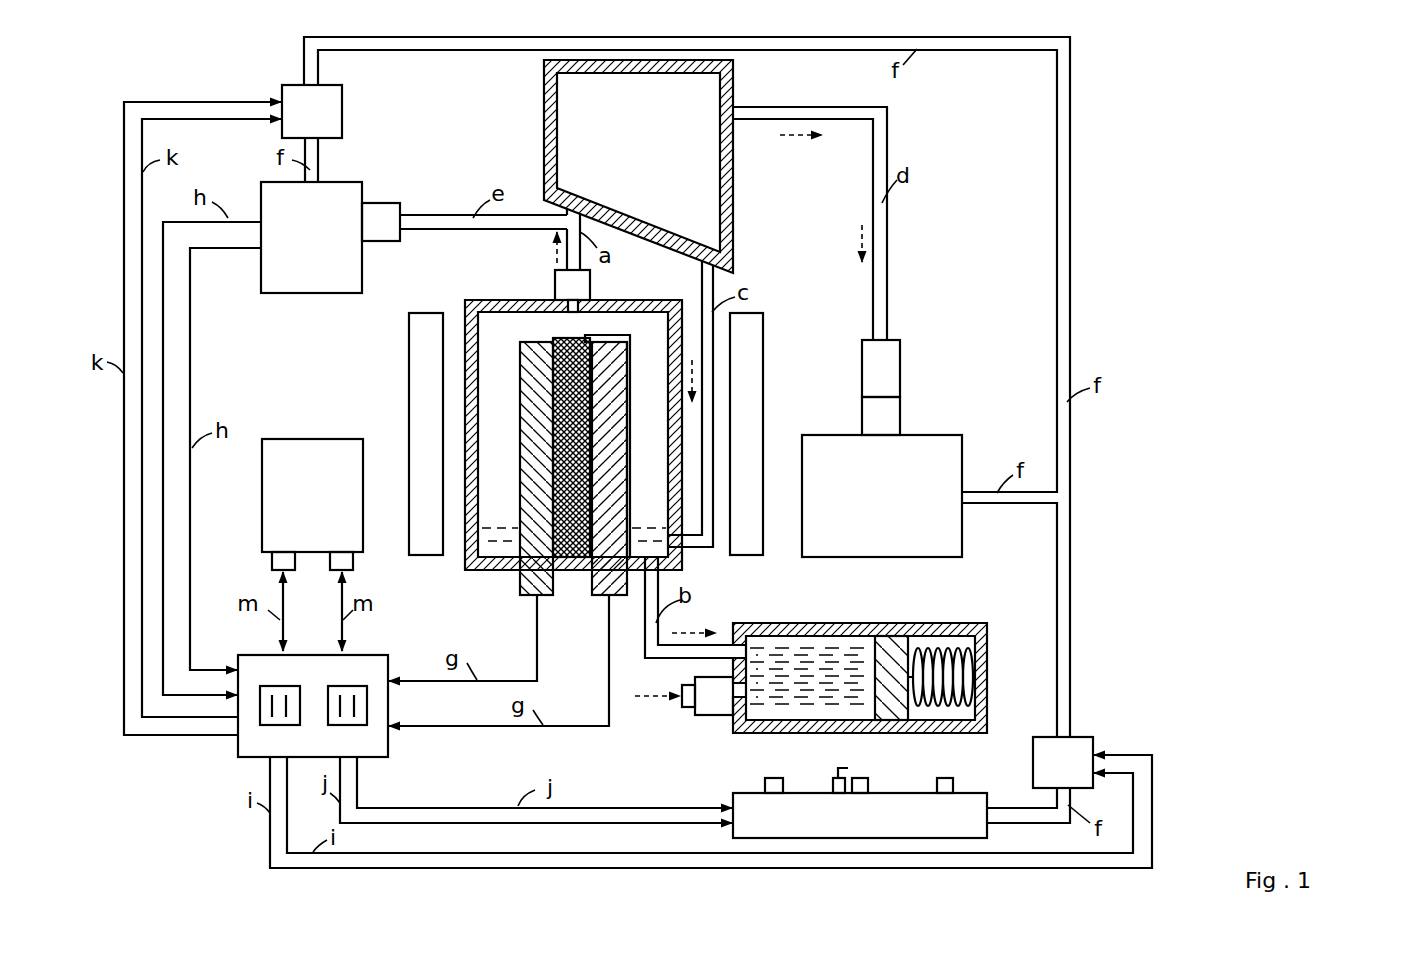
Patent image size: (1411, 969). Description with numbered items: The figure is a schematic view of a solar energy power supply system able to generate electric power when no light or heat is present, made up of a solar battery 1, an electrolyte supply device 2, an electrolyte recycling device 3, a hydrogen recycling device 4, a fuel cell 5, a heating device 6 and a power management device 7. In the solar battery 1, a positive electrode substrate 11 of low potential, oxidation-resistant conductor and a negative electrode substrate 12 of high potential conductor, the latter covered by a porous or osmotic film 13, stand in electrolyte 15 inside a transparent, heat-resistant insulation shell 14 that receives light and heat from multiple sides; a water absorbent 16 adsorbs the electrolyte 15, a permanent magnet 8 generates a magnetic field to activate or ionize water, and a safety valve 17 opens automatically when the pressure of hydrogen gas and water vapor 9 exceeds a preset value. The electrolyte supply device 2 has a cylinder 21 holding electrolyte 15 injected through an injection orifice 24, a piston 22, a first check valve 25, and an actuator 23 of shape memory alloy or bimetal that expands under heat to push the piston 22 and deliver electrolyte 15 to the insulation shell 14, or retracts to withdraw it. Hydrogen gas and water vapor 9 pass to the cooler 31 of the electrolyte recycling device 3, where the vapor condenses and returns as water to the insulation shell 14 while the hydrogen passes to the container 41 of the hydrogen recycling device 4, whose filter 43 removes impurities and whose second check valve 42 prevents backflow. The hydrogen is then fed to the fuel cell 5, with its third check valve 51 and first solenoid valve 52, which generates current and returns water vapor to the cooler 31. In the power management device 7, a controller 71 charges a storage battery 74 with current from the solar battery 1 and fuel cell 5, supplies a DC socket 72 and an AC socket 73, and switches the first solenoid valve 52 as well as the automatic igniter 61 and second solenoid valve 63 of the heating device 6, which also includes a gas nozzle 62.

The solar battery 1 is at (547, 436).
The electrolyte supply device 2 is at (825, 654).
The electrolyte recycling device 3 is at (639, 166).
The hydrogen recycling device 4 is at (878, 448).
The fuel cell 5 is at (337, 181).
The heating device 6 is at (900, 764).
The power management device 7 is at (304, 598).
The permanent magnet 8 is at (415, 355).
The hydrogen gas and water vapor 9 is at (583, 148).
The positive electrode substrate 11 is at (523, 578).
The negative electrode substrate 12 is at (597, 582).
The film 13 is at (633, 337).
The insulation shell 14 is at (465, 303).
The electrolyte 15 is at (480, 540).
The water absorbent 16 is at (563, 342).
The safety valve 17 is at (560, 290).
The cylinder 21 is at (770, 623).
The piston 22 is at (902, 640).
The actuator 23 is at (957, 652).
The injection orifice 24 is at (682, 688).
The first check valve 25 is at (697, 712).
The cooler 31 is at (544, 87).
The container 41 is at (833, 445).
The second check valve 42 is at (865, 420).
The filter 43 is at (893, 382).
The third check valve 51 is at (376, 205).
The first solenoid valve 52 is at (335, 103).
The automatic igniter 61 is at (832, 778).
The gas nozzle 62 is at (770, 778).
The second solenoid valve 63 is at (1078, 742).
The controller 71 is at (363, 747).
The DC socket 72 is at (272, 720).
The AC socket 73 is at (362, 680).
The storage battery 74 is at (318, 445).